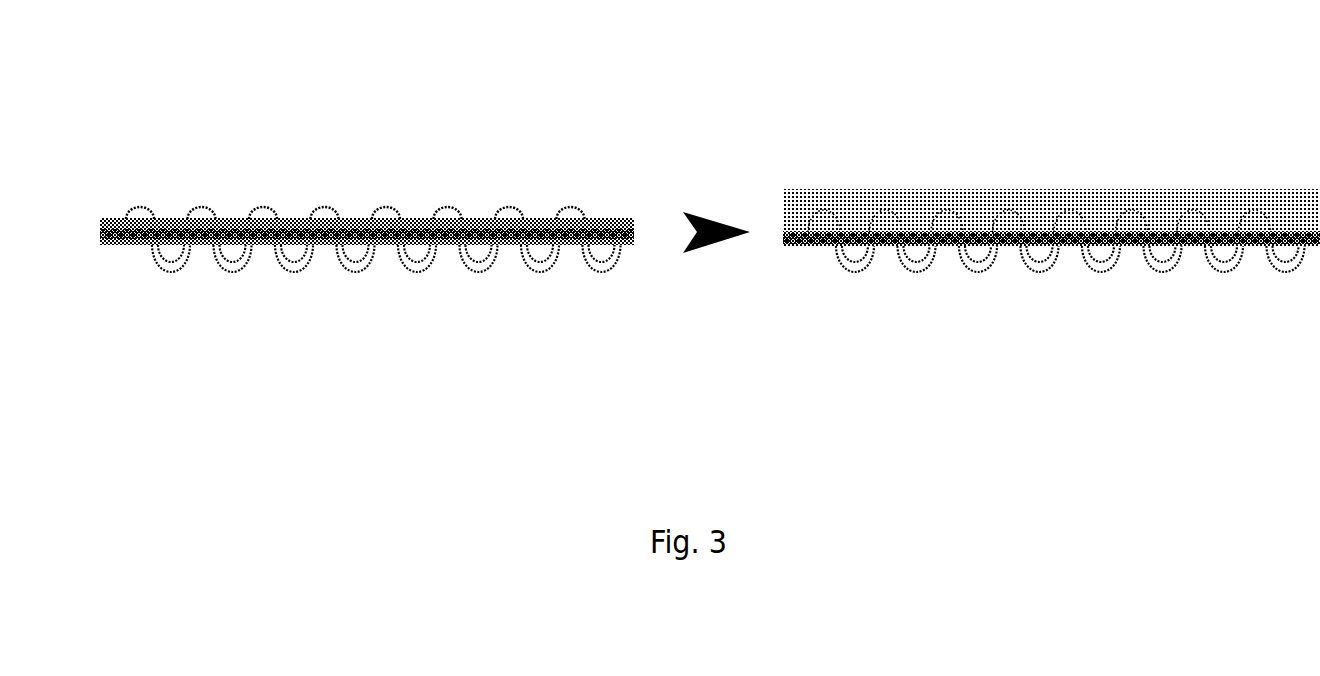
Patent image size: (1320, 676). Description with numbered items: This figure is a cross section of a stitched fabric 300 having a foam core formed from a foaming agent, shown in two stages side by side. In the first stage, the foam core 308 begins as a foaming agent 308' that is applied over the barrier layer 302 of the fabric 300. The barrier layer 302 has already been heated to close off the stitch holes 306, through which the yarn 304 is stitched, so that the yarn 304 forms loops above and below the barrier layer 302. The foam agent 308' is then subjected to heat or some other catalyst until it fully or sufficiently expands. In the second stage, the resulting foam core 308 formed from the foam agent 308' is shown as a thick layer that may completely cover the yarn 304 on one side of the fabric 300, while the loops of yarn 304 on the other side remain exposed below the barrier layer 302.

The fabric 300 is at (356, 117).
The barrier layer 302 is at (141, 247).
The yarn 304 is at (200, 208).
The stitch holes 306 is at (208, 243).
The foam core 308 is at (1051, 184).
The foaming agent 308' is at (367, 190).